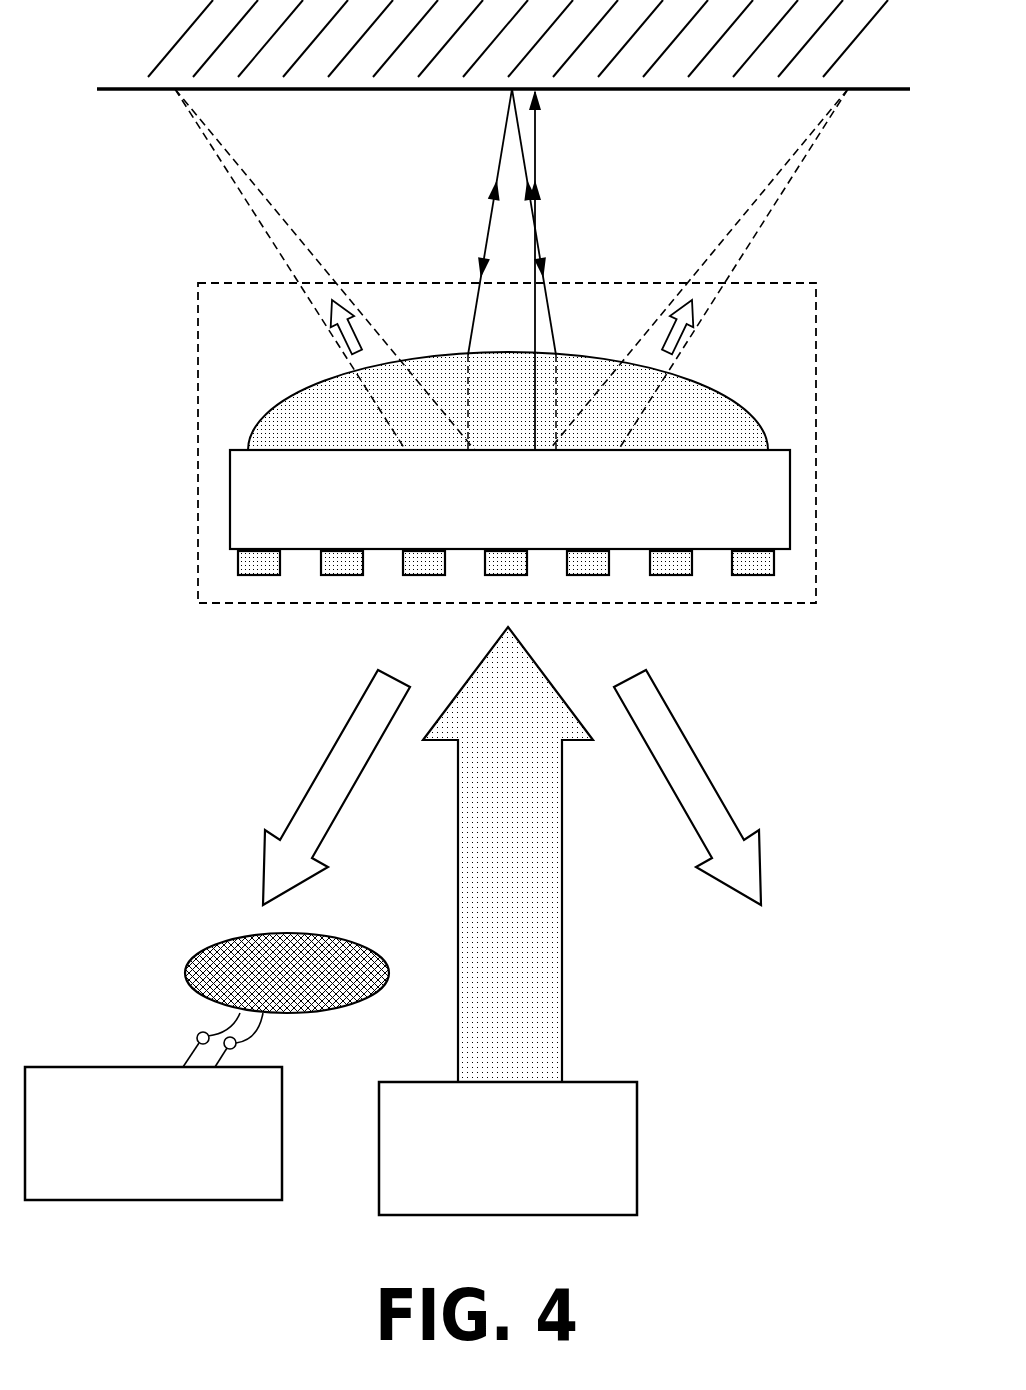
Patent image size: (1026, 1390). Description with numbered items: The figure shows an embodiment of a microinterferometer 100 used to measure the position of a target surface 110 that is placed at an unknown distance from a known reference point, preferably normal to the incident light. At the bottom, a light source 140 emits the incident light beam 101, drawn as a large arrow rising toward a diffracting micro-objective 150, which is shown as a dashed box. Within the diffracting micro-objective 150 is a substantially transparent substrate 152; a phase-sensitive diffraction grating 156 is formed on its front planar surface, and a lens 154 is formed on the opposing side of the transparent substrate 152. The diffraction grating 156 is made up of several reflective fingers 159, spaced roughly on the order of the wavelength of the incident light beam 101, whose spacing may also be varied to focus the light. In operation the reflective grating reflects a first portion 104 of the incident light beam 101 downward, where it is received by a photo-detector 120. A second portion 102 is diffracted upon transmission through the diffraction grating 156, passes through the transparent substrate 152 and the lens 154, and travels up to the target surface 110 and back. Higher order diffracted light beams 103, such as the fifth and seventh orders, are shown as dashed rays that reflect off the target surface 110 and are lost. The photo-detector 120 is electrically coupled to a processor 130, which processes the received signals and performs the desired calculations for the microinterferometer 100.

The microinterferometer 100 is at (845, 790).
The incident light beam 101 is at (562, 975).
The second portion of the incident light beam 102 is at (535, 210).
The higher order diffracted light beams 103 is at (797, 165).
The first portion of the incident light beam 104 is at (302, 797).
The target surface 110 is at (158, 30).
The photo-detector 120 is at (185, 967).
The processor 130 is at (280, 1192).
The light source 140 is at (634, 1200).
The diffracting micro-objective 150 is at (524, 469).
The transparent substrate 152 is at (741, 533).
The lens 154 is at (280, 402).
The phase-sensitive diffraction grating 156 is at (632, 596).
The diffraction grating fingers 159 is at (237, 562).